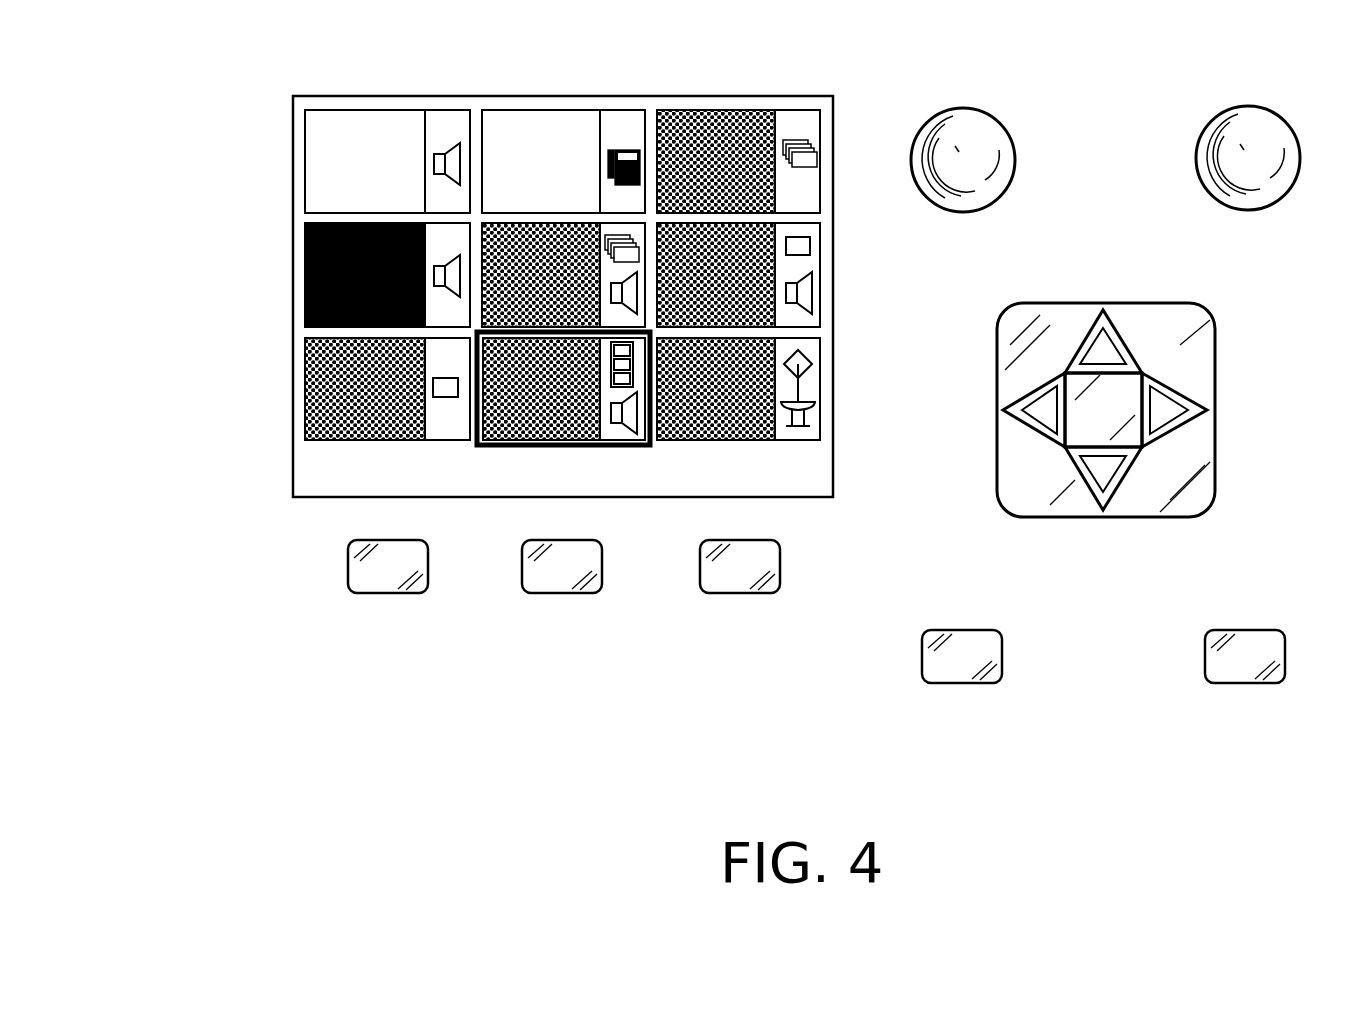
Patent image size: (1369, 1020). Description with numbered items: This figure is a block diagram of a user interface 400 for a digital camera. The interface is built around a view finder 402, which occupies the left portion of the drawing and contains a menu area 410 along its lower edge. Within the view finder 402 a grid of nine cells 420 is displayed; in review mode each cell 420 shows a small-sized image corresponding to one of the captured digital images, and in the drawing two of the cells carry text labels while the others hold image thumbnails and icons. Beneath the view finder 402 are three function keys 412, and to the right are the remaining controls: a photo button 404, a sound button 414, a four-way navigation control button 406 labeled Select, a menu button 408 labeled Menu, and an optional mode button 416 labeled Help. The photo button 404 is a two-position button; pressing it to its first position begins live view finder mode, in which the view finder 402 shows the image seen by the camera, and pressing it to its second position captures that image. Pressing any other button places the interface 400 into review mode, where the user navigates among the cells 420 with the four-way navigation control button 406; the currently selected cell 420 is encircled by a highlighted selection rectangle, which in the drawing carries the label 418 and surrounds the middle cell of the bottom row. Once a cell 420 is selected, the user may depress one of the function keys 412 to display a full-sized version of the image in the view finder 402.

The user interface 400 is at (1035, 852).
The view finder 402 is at (293, 120).
The photo button 404 is at (990, 116).
The four-way navigation control button 406 is at (1215, 368).
The menu button 408 is at (930, 630).
The menu area 410 is at (494, 329).
The function keys 412 is at (322, 585).
The sound button 414 is at (1278, 113).
The mode button 416 is at (1280, 630).
The selected item highlight 418 is at (617, 447).
The cells 420 is at (303, 188).